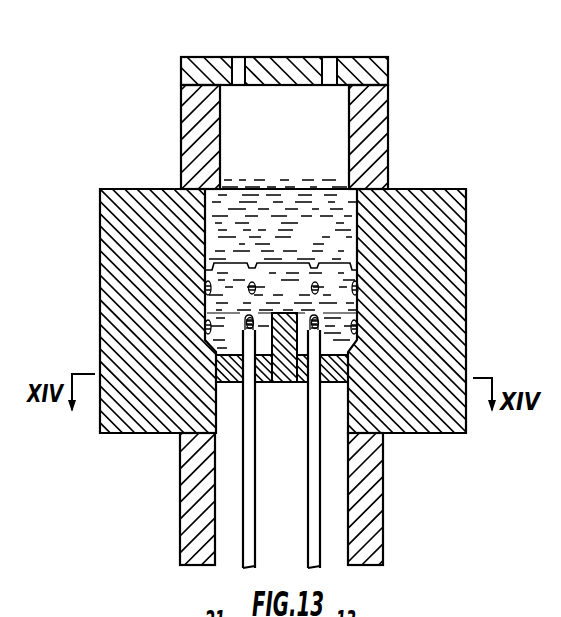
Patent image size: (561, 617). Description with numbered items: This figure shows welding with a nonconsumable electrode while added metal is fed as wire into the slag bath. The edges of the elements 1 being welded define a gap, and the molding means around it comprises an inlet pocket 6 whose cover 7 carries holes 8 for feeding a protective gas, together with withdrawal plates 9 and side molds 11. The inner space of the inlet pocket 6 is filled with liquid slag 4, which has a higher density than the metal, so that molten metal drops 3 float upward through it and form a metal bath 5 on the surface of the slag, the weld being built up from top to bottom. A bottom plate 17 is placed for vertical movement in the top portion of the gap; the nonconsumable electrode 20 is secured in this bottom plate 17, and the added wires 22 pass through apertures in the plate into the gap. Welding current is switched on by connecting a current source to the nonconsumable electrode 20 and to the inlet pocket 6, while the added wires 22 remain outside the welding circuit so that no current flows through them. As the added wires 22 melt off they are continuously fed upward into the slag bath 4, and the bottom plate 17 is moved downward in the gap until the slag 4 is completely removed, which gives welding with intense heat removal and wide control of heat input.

The elements being welded 1 is at (450, 233).
The molten metal drops 3 is at (248, 280).
The slag 4 is at (328, 292).
The metal bath 5 is at (238, 200).
The inlet pocket 6 is at (370, 108).
The cover 7 is at (378, 77).
The holes 8 is at (329, 60).
The withdrawal plates 9 is at (378, 484).
The side molds 11 is at (267, 97).
The bottom plate 17 is at (337, 383).
The nonconsumable electrode 20 is at (280, 387).
The added wires 22 is at (313, 478).